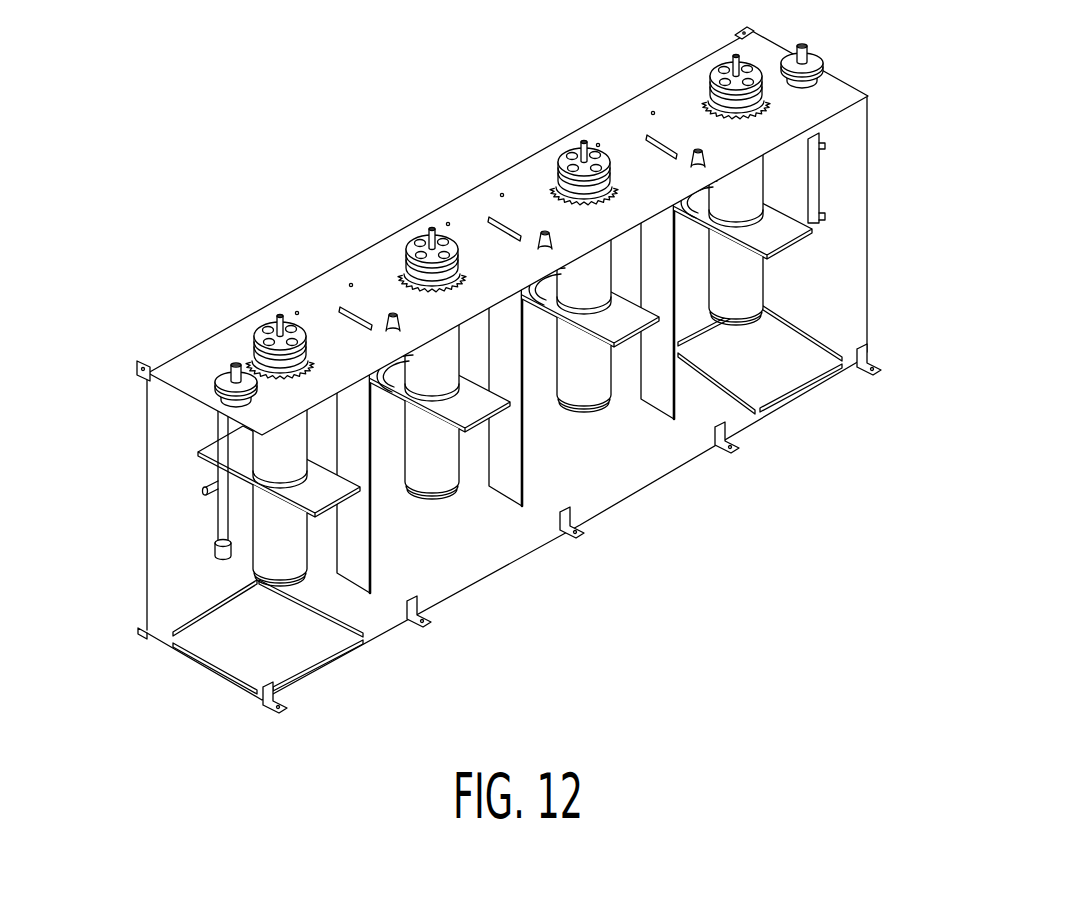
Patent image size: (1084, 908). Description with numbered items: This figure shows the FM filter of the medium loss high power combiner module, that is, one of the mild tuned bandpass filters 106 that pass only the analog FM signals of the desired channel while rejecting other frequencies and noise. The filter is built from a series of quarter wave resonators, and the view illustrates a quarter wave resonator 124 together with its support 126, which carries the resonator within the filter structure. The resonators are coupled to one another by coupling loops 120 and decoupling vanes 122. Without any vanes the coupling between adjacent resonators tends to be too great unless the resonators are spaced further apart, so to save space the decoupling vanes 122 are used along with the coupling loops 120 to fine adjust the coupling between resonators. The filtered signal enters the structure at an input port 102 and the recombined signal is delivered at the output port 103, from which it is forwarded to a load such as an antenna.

The input port 102 is at (228, 364).
The output port 103 is at (806, 52).
The mild tuned bandpass filter 106 is at (717, 70).
The coupling loop 120 is at (398, 374).
The decoupling vane 122 is at (357, 535).
The quarter wave resonator 124 is at (239, 163).
The support 126 is at (148, 480).